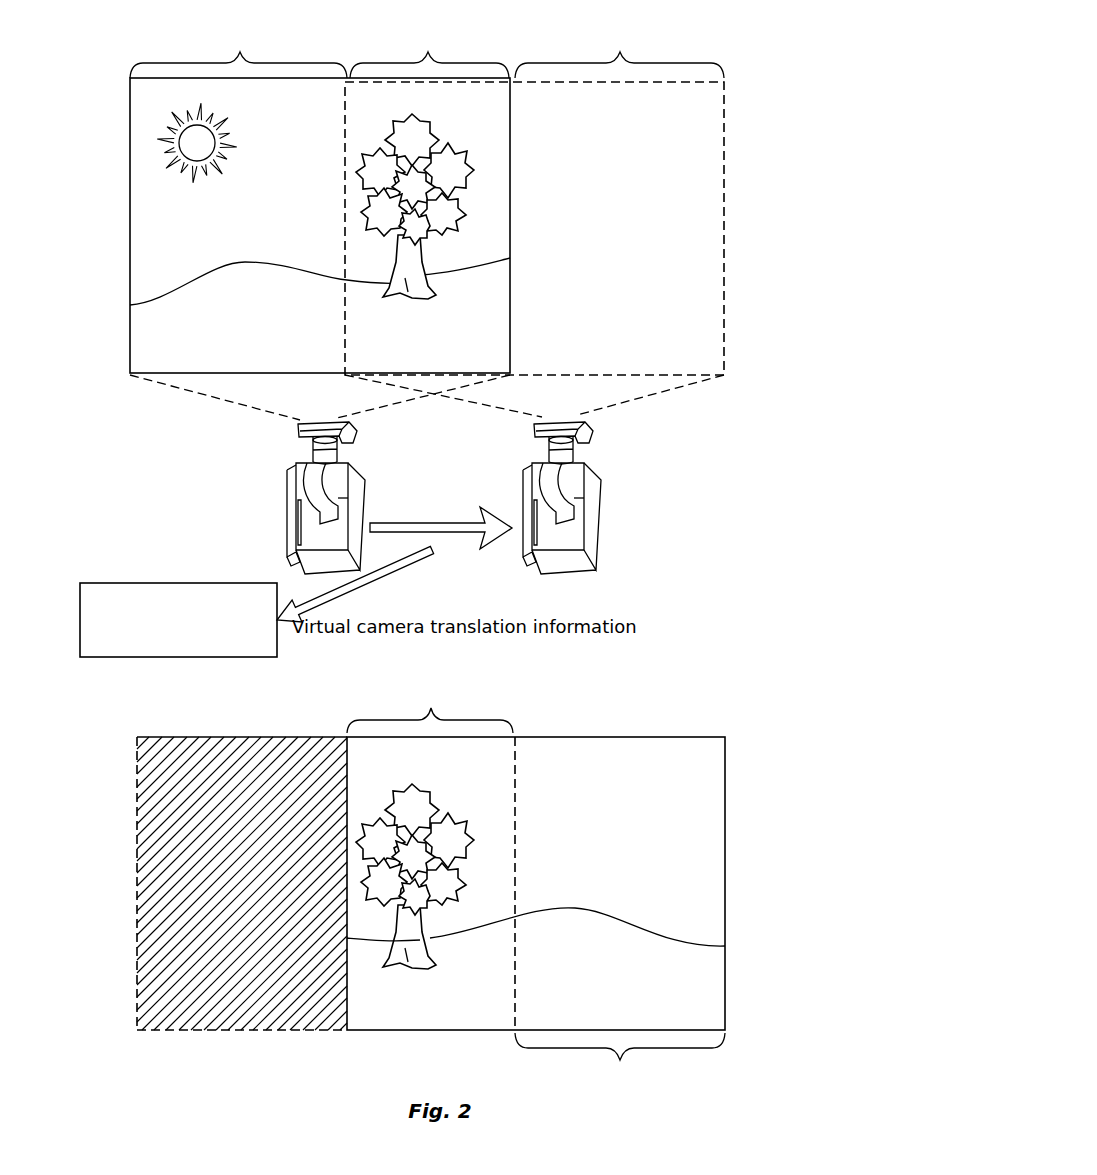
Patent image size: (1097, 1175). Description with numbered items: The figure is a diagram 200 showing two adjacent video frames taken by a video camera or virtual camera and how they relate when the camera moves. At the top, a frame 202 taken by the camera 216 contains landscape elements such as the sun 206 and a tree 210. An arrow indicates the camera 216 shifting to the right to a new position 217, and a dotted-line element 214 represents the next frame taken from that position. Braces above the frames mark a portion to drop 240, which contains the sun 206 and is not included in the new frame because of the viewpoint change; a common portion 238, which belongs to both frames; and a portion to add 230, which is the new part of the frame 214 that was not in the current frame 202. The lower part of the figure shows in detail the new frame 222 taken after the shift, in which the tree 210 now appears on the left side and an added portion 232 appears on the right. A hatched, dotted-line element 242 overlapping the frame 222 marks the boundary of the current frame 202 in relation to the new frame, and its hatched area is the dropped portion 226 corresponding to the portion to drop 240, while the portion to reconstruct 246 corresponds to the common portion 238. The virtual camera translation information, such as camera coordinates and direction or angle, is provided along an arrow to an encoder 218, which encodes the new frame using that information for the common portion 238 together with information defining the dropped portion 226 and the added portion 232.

The diagram 200 is at (788, 52).
The frame 202 is at (130, 227).
The sun 206 is at (160, 160).
The tree 210 is at (430, 118).
The next frame 214 is at (724, 232).
The camera 216 is at (296, 524).
The new position 217 is at (600, 520).
The encoder 218 is at (80, 600).
The frame 222 is at (725, 777).
The dropped portion 226 is at (137, 892).
The portion to add 230 is at (619, 40).
The added portion 232 is at (620, 1069).
The common portion 238 is at (429, 40).
The portion to drop 240 is at (238, 40).
The dotted-line element 242 is at (190, 1031).
The portion to reconstruct 246 is at (431, 845).